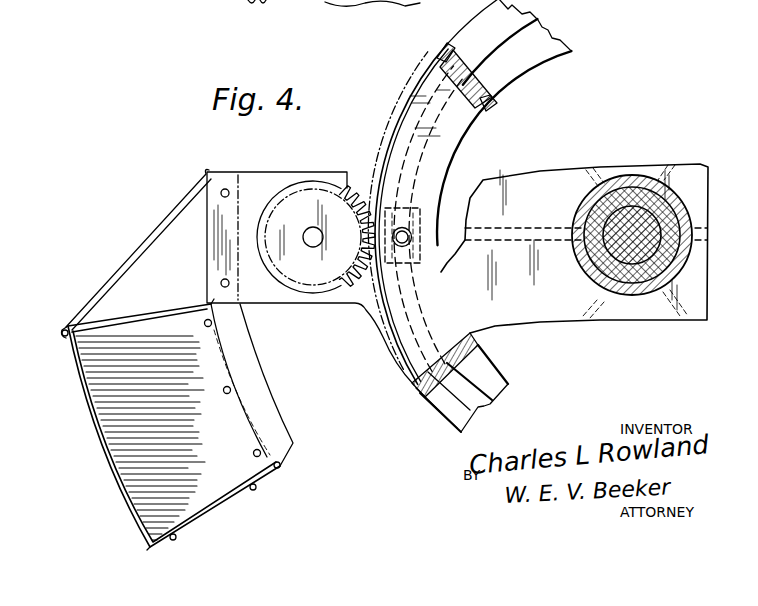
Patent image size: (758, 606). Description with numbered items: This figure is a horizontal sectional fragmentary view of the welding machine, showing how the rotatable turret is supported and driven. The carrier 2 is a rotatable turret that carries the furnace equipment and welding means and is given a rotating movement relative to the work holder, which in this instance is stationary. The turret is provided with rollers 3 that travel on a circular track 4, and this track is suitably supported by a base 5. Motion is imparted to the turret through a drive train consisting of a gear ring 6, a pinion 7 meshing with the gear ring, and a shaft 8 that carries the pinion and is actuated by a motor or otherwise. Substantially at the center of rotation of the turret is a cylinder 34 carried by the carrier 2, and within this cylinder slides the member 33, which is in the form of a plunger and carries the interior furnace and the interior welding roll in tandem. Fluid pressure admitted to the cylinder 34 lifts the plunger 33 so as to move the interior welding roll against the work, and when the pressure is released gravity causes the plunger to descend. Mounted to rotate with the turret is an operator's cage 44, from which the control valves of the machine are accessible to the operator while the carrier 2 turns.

The carrier 2 is at (466, 114).
The rollers 3 is at (447, 181).
The circular track 4 is at (522, 40).
The base 5 is at (547, 57).
The gear ring 6 is at (397, 111).
The pinion 7 is at (310, 277).
The shaft 8 is at (312, 228).
The member 33 is at (633, 262).
The cylinder 34 is at (614, 192).
The operator's cage 44 is at (95, 402).